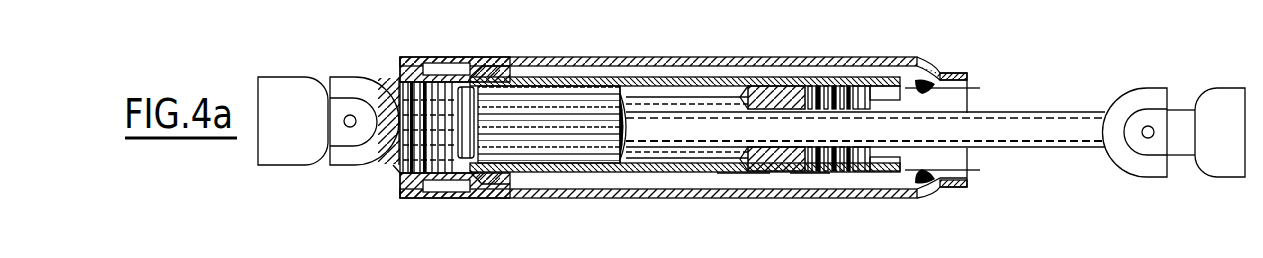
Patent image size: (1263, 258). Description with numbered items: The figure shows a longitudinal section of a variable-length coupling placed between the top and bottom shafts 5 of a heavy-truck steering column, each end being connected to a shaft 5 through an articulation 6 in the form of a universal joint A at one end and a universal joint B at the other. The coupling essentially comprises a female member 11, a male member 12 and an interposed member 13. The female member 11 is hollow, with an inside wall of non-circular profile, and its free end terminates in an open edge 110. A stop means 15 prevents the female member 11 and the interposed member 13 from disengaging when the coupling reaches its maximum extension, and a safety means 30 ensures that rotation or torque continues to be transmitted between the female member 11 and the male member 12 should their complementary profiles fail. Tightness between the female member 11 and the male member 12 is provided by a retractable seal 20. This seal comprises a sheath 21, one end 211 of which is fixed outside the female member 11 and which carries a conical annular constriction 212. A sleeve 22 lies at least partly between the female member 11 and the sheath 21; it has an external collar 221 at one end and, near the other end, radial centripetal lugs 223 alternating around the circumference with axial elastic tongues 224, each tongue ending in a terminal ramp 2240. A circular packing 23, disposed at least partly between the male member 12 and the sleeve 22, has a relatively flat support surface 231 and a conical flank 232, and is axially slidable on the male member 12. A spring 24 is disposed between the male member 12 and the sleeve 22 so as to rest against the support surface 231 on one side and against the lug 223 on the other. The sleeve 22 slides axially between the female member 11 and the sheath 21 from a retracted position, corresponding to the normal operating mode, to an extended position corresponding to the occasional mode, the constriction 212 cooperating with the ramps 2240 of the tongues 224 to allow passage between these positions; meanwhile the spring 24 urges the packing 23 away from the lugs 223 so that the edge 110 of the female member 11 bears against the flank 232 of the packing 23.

The shaft 5 is at (751, 127).
The articulation 6 is at (332, 72).
The universal joint A is at (1154, 132).
The universal joint B is at (346, 126).
The retractable seal 20 is at (705, 52).
The sheath 21 is at (661, 57).
The sleeve 22 is at (619, 86).
The external collar 221 is at (494, 60).
The end of the sheath 211 is at (404, 66).
The female member 11 is at (385, 83).
The safety means 30 is at (393, 167).
The interposed member 13 is at (446, 95).
The male member 12 is at (552, 107).
The open edge 110 is at (771, 172).
The conical flank 232 is at (717, 174).
The relatively flat support surface 231 is at (800, 174).
The stop means 15 is at (757, 86).
The circular packing 23 is at (793, 86).
The spring 24 is at (838, 86).
The radial centripetal lug 223 is at (882, 98).
The axial elastic tongue 224 is at (905, 80).
The conical annular constriction 212 is at (937, 71).
The terminal ramp 2240 is at (980, 88).